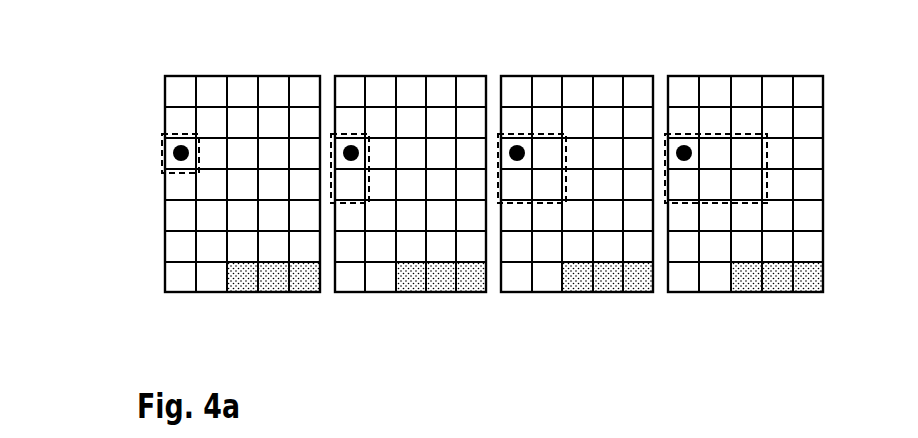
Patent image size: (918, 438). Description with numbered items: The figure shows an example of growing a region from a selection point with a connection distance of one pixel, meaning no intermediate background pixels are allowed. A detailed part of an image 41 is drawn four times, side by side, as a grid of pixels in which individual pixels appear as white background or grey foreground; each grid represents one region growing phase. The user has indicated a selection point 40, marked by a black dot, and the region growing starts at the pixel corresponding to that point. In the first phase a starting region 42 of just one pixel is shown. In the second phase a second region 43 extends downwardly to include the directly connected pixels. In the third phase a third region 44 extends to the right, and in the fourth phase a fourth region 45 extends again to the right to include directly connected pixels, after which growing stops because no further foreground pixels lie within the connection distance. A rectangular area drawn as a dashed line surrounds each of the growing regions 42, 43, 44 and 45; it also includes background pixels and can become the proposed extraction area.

The selection point 40 is at (163, 152).
The detailed part of an image 41 is at (163, 235).
The starting region 42 is at (196, 135).
The second region 43 is at (365, 138).
The third region 44 is at (565, 135).
The fourth region 45 is at (766, 137).